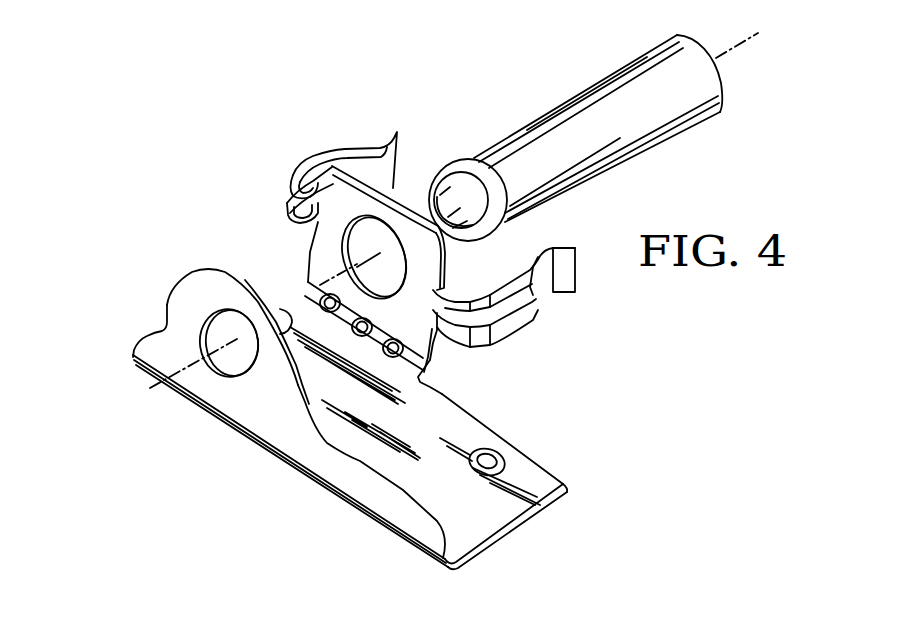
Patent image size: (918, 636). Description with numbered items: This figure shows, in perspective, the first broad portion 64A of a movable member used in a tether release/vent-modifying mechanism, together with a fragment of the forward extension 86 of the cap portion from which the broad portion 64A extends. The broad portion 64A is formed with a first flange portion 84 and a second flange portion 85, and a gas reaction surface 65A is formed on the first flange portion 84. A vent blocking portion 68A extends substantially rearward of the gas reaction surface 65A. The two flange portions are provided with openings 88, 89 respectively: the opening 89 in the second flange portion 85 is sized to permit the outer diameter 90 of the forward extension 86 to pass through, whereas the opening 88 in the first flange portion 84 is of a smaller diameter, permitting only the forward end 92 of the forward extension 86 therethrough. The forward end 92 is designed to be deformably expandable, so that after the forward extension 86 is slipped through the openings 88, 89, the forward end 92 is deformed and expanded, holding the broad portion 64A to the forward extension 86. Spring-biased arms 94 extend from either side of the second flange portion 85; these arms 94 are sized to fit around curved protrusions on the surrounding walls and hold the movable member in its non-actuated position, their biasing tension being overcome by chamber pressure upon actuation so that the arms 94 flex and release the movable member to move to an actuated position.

The first broad portion 64A is at (425, 537).
The gas reaction surface 65A is at (178, 305).
The vent blocking portion 68A is at (498, 507).
The first flange portion 84 is at (205, 287).
The second flange portion 85 is at (338, 187).
The forward extension 86 is at (515, 123).
The opening 88 is at (228, 337).
The opening 89 is at (380, 225).
The outer diameter 90 is at (482, 140).
The forward end 92 is at (463, 177).
The spring-biased arms 94 is at (312, 170).